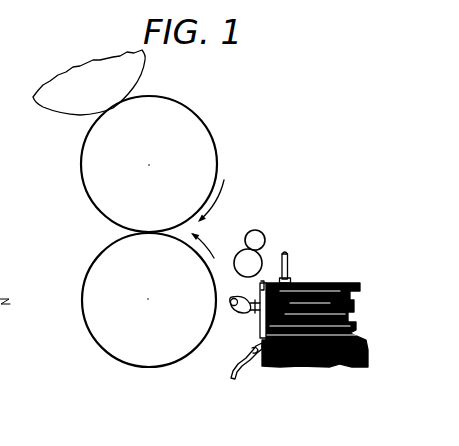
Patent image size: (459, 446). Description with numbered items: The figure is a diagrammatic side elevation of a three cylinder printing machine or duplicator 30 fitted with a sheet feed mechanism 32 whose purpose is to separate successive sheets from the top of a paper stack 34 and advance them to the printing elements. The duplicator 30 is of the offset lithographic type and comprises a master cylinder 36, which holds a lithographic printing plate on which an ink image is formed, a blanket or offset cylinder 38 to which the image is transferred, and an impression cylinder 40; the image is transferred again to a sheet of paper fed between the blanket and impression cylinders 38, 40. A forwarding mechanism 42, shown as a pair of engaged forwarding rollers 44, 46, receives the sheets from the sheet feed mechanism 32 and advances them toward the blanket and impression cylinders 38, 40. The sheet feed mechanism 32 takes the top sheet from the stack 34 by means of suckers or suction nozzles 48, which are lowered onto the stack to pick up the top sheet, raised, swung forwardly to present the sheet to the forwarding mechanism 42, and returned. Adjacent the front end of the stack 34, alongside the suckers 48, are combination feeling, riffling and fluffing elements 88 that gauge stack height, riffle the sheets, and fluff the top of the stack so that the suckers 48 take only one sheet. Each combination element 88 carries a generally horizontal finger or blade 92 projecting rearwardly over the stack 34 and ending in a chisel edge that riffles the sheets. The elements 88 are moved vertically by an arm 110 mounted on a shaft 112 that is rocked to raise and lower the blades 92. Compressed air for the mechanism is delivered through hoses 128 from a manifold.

The printing machine or duplicator 30 is at (338, 121).
The sheet feed mechanism 32 is at (336, 240).
The paper stack 34 is at (351, 332).
The master cylinder 36 is at (136, 71).
The blanket or offset cylinder 38 is at (188, 125).
The impression cylinder 40 is at (127, 347).
The forwarding mechanism 42 is at (269, 200).
The forwarding roller 44 is at (259, 231).
The forwarding roller 46 is at (242, 248).
The sucker or suction nozzle 48 is at (289, 268).
The combination feeling, riffling and fluffing element 88 is at (261, 284).
The finger or blade 92 is at (270, 284).
The arm 110 is at (251, 316).
The shaft 112 is at (242, 310).
The hose 128 is at (230, 370).